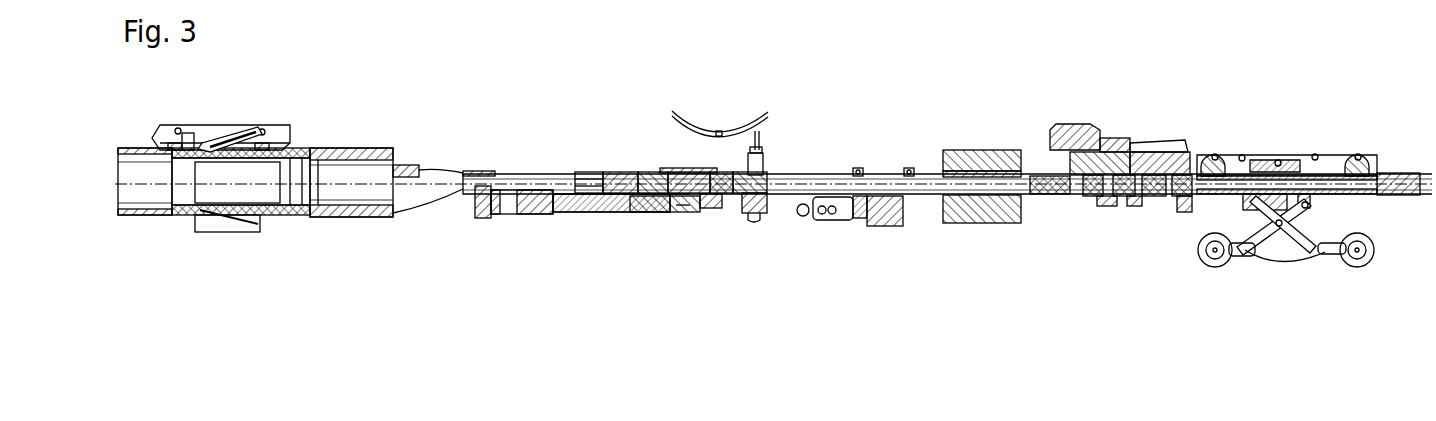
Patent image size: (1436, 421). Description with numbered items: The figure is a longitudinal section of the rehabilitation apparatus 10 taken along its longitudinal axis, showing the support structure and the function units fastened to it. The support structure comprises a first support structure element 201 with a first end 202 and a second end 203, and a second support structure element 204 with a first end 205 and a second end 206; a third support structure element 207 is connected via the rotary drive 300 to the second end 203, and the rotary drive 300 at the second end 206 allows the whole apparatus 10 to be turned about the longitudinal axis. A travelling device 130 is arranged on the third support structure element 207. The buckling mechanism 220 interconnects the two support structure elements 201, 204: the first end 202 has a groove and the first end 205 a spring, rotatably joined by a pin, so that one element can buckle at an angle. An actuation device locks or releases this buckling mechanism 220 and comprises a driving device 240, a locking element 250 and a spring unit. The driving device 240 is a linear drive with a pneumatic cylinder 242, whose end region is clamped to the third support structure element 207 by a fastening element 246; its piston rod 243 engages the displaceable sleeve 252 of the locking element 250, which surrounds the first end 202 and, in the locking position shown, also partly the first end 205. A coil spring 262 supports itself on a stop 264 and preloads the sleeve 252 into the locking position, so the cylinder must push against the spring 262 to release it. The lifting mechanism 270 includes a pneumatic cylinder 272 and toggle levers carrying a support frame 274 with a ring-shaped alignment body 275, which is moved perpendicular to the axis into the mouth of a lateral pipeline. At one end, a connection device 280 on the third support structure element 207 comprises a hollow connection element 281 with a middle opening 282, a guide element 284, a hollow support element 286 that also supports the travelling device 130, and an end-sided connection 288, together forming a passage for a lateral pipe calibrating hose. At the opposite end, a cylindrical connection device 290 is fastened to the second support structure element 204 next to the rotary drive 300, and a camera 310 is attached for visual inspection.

The rollable loading unit 10 is at (1283, 130).
The travelling device 130 is at (174, 120).
The first support structure element 201 is at (650, 170).
The first end 202 is at (680, 205).
The second end 203 is at (590, 172).
The second support structure element 204 is at (743, 170).
The first end 205 is at (734, 210).
The second end 206 is at (1032, 224).
The third support structure element 207 is at (515, 170).
The buckling mechanism 220 is at (706, 212).
The driving device 240 is at (605, 197).
The pneumatic cylinder 242 is at (507, 220).
The piston rod 243 is at (640, 220).
The fastening element 246 is at (478, 220).
The locking element 250 is at (682, 205).
The sleeve 252 is at (674, 170).
The spring 262 is at (622, 172).
The stop 264 is at (628, 128).
The lifting mechanism 270 is at (793, 160).
The pneumatic cylinder 272 is at (848, 226).
The support frame 274 is at (778, 124).
The alignment body 275 is at (764, 110).
The connection device 280 is at (306, 207).
The connection element 281 is at (332, 224).
The middle opening 282 is at (329, 128).
The guide element 284 is at (408, 222).
The support element 286 is at (215, 120).
The connection 288 is at (145, 220).
The connection device 290 is at (1002, 249).
The rotary drive 300 is at (1111, 183).
The camera 310 is at (1066, 124).